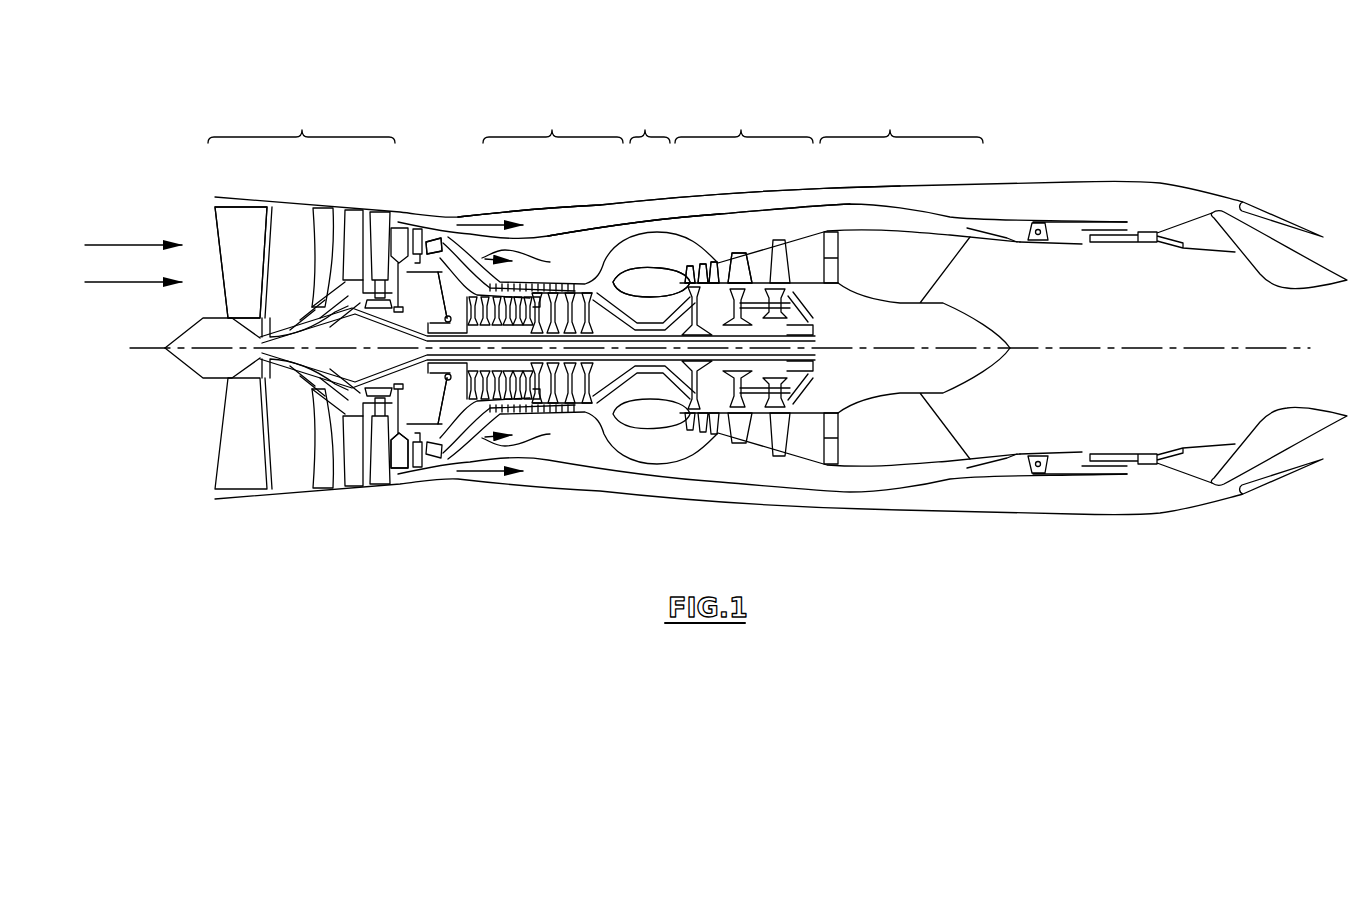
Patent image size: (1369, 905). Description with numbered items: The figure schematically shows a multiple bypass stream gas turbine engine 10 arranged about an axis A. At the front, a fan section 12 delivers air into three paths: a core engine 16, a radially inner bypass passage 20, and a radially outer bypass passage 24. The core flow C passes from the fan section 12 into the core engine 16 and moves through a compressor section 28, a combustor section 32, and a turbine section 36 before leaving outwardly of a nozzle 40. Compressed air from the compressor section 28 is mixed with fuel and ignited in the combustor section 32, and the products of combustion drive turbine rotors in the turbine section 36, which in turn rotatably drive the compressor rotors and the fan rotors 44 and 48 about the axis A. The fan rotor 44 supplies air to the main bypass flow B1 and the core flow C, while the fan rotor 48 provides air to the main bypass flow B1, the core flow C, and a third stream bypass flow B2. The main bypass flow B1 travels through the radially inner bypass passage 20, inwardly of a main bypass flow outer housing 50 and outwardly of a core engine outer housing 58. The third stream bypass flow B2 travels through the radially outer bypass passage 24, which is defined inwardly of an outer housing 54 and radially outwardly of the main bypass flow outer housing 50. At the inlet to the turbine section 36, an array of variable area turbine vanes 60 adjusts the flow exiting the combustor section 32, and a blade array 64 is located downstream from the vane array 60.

The engine 10 is at (965, 106).
The fan section 12 is at (302, 130).
The core engine 16 is at (449, 241).
The radially inner bypass passage 20 is at (557, 243).
The radially outer bypass passage 24 is at (537, 219).
The compressor section 28 is at (552, 130).
The combustor section 32 is at (645, 130).
The turbine section 36 is at (741, 130).
The nozzle 40 is at (890, 130).
The fan rotor 44 is at (397, 457).
The fan rotor 48 is at (290, 230).
The main bypass flow outer housing 50 is at (711, 213).
The outer housing 54 is at (604, 204).
The core engine outer housing 58 is at (603, 265).
The variable area turbine vane array 60 is at (681, 271).
The blade array 64 is at (708, 260).
The axis A is at (1324, 347).
The main bypass flow B1 is at (559, 442).
The third stream bypass flow B2 is at (483, 226).
The core flow C is at (442, 290).